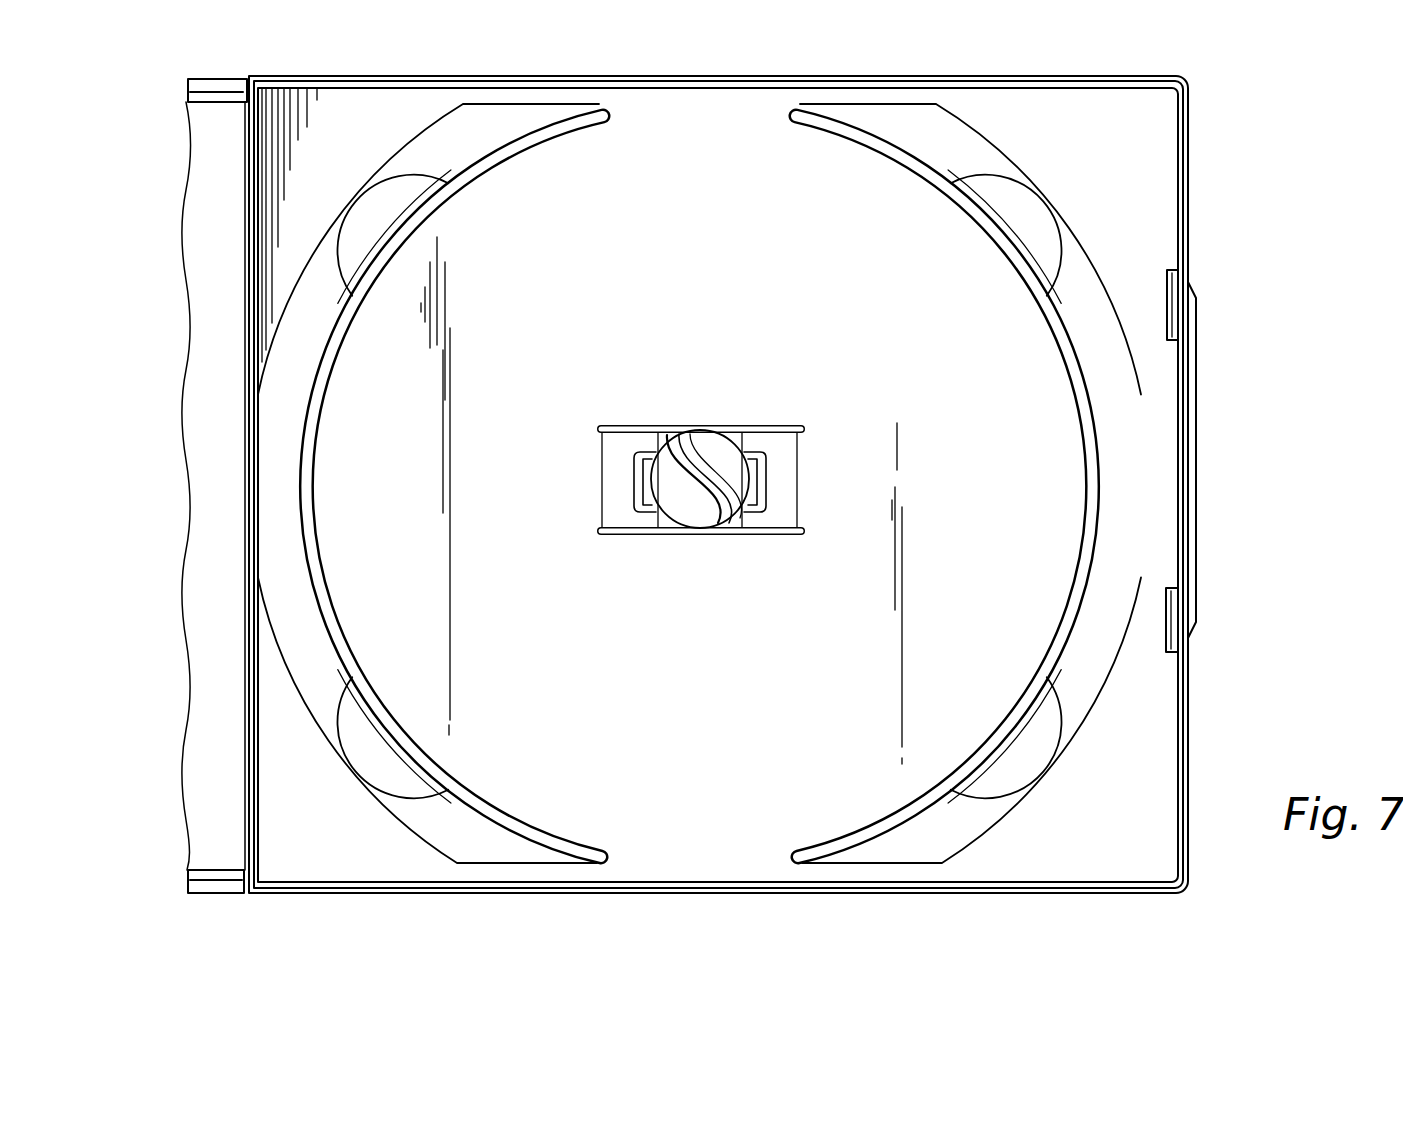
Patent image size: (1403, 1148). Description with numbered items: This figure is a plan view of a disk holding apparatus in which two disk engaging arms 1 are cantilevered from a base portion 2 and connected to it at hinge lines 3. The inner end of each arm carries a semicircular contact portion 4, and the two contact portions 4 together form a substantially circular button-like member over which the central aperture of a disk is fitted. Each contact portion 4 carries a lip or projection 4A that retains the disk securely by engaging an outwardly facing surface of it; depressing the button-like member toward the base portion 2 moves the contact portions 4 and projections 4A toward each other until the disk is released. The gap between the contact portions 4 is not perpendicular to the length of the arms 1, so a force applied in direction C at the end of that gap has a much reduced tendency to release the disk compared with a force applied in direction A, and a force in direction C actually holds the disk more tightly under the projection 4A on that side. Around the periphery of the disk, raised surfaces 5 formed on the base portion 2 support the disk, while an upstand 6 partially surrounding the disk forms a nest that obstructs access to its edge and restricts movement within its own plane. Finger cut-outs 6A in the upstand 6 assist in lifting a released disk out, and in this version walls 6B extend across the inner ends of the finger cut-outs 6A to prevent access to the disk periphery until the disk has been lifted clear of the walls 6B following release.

The disk engaging arm 1 is at (770, 438).
The base portion 2 is at (706, 703).
The hinge line 3 is at (597, 492).
The contact portion 4 is at (718, 448).
The projection 4A is at (637, 468).
The raised surface 5 is at (531, 139).
The upstand 6 is at (317, 678).
The finger cut-out 6A is at (377, 213).
The wall 6B is at (427, 193).
The direction A is at (700, 408).
The direction C is at (651, 403).